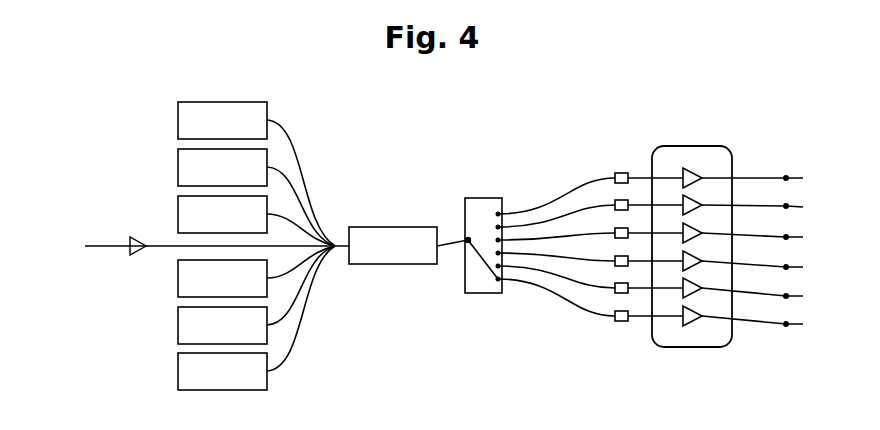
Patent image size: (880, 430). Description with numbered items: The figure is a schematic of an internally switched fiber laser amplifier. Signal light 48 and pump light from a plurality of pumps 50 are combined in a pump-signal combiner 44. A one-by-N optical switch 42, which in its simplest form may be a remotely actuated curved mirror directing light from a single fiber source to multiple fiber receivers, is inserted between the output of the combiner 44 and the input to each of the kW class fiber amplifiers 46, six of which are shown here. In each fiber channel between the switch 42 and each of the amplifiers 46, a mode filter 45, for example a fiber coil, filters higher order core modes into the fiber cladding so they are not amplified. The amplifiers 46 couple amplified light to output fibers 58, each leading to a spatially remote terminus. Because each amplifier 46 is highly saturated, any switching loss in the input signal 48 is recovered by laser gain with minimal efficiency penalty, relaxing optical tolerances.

The signal light 48 is at (110, 244).
The pumps 50 is at (265, 92).
The pump-signal combiner 44 is at (407, 266).
The 1×N optical switch 42 is at (483, 294).
The mode filter 45 is at (645, 333).
The kW class fiber amplifiers 46 is at (695, 348).
The output fibers 58 is at (790, 238).